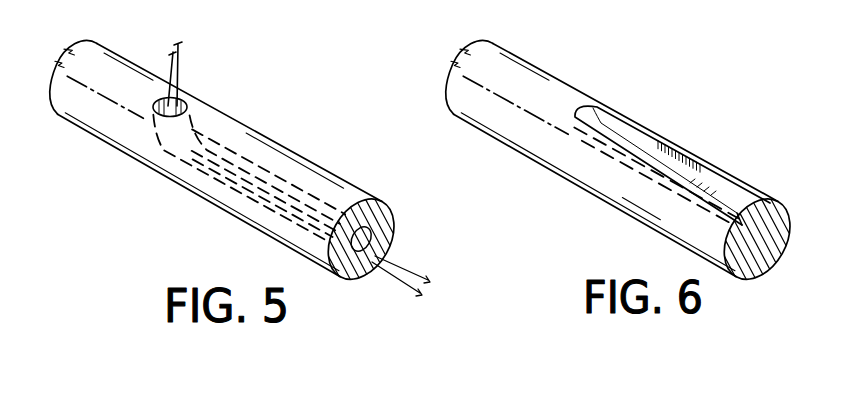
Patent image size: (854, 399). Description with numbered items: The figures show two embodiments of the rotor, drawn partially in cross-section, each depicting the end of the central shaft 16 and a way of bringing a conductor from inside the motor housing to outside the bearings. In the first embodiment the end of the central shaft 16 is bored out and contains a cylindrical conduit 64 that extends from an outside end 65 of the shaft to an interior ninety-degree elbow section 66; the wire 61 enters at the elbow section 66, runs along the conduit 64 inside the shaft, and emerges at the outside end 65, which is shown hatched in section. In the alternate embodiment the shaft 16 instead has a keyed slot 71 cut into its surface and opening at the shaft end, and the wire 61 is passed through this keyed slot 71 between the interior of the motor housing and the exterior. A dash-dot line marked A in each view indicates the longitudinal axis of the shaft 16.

In FIG. 5, the central shaft 16 is at (247, 121).
In FIG. 6, the central shaft 16 is at (572, 85).
In FIG. 5, the wire 61 is at (178, 62).
In FIG. 5, the cylindrical conduit 64 is at (291, 188).
In FIG. 5, the outside end 65 is at (375, 207).
In FIG. 5, the interior 90° elbow section 66 is at (190, 100).
In FIG. 6, the keyed slot 71 is at (697, 175).
In FIG. 5, the longitudinal axis A is at (118, 105).
In FIG. 6, the longitudinal axis A is at (490, 88).